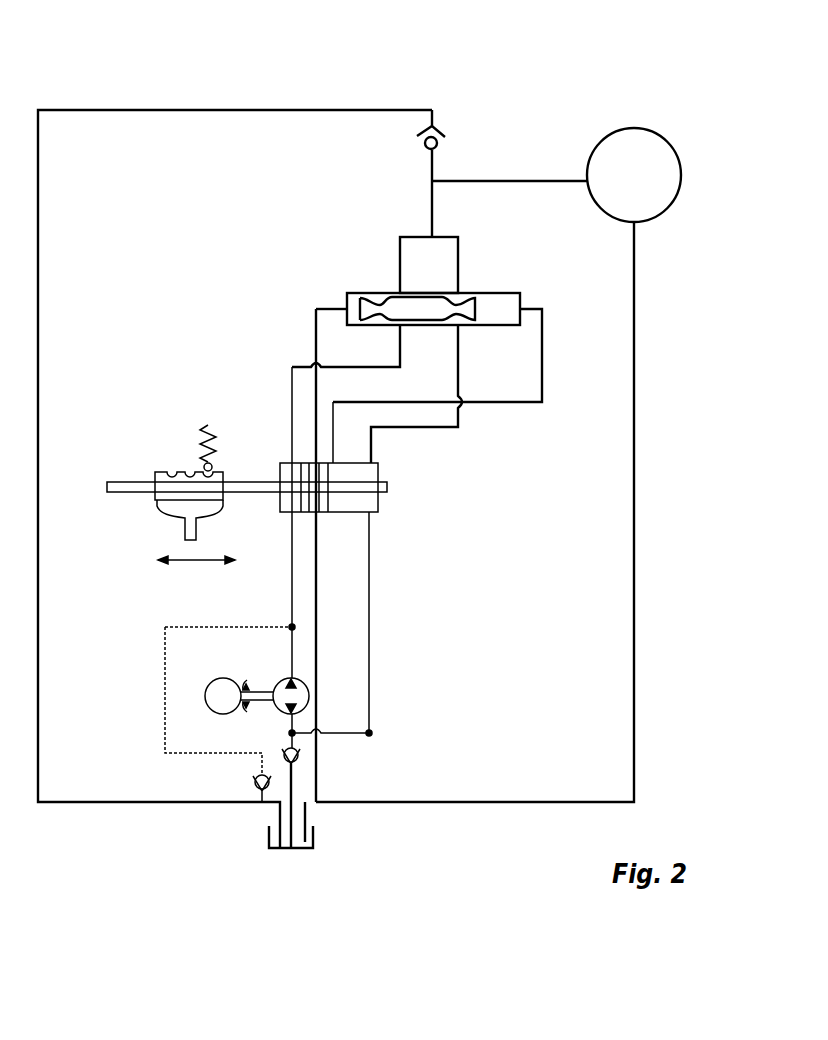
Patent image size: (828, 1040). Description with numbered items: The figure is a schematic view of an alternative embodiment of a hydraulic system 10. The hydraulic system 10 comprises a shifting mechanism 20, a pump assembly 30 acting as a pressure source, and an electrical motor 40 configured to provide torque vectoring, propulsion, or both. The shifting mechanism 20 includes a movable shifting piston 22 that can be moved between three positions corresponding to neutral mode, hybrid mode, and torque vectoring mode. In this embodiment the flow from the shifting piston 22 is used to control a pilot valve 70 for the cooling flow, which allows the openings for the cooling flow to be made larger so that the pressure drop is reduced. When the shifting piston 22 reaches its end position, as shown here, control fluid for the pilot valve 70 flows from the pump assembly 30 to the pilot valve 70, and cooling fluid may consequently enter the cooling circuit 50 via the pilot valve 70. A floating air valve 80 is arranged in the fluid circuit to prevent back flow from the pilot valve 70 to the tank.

The hydraulic system 10 is at (497, 93).
The shifting mechanism 20 is at (240, 423).
The shifting piston 22 is at (384, 481).
The pump assembly 30 is at (253, 669).
The electrical motor 40 is at (652, 129).
The cooling circuit 50 is at (486, 181).
The pilot valve 70 is at (356, 292).
The floating air valve 80 is at (424, 130).